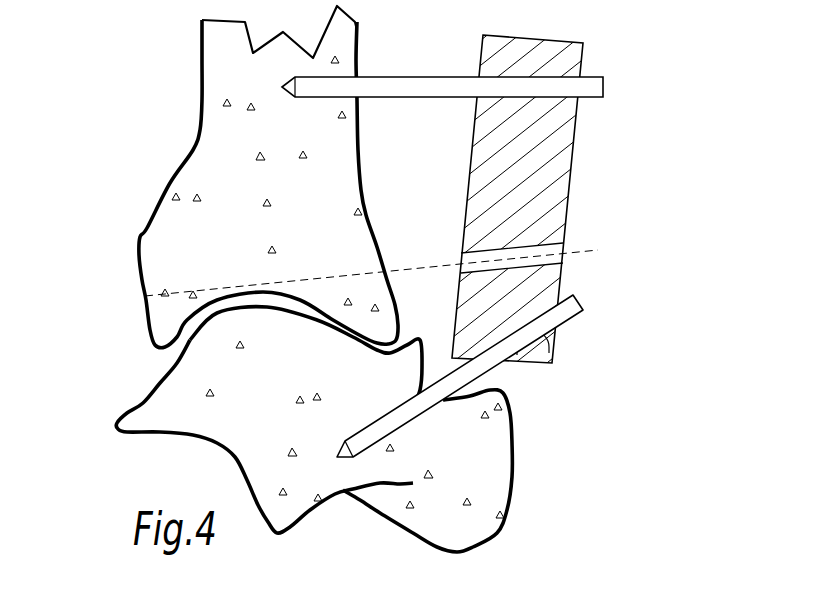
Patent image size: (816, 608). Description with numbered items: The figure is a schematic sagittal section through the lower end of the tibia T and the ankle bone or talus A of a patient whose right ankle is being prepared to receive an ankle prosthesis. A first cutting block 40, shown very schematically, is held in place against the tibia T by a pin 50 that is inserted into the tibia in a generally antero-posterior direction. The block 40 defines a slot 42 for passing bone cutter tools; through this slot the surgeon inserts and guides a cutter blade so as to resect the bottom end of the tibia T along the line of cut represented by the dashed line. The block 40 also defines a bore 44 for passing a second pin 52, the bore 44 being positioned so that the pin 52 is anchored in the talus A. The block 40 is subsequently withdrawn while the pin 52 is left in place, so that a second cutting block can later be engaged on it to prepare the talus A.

The tibia T is at (220, 182).
The talus A is at (208, 393).
The first cutting block 40 is at (417, 248).
The slot 42 is at (563, 255).
The bore 44 is at (553, 359).
The pin 50 is at (603, 84).
The pin 52 is at (583, 297).